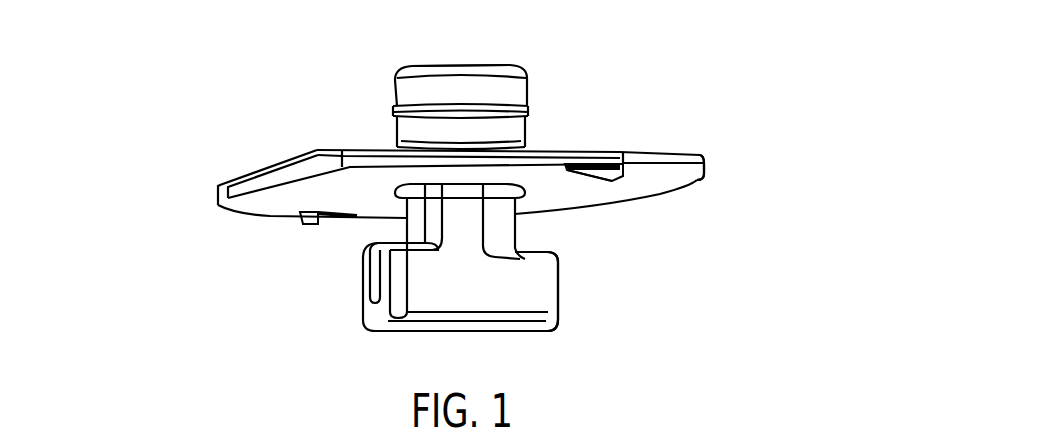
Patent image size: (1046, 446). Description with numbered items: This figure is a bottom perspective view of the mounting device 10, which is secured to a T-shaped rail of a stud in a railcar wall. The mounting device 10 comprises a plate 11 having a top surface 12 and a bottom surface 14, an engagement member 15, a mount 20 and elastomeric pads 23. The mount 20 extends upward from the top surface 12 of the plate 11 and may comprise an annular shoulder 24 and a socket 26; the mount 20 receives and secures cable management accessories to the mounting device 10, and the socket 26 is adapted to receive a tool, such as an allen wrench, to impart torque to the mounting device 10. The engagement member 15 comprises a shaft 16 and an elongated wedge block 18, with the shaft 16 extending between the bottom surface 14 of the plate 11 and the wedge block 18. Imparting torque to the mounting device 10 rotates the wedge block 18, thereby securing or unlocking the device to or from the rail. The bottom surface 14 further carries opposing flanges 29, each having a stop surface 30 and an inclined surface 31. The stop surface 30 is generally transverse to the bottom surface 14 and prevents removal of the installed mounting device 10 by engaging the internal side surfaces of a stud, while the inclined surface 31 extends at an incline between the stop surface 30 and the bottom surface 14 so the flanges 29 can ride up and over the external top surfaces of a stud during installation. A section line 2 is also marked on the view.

The section line 2- 2 is at (60, 172).
The mounting device 10 is at (660, 117).
The plate 11 is at (703, 171).
The top surface 12 is at (357, 147).
The bottom surface 14 is at (267, 205).
The engagement member 15 is at (572, 320).
The shaft 16 is at (500, 232).
The elongated wedge block 18 is at (488, 295).
The mount 20 is at (542, 86).
The elastomeric pads 23 is at (365, 287).
The annular shoulder 24 is at (425, 85).
The socket 26 is at (480, 55).
The opposing flanges 29 is at (297, 245).
The stop surface 30 is at (302, 227).
The inclined surface 31 is at (325, 223).